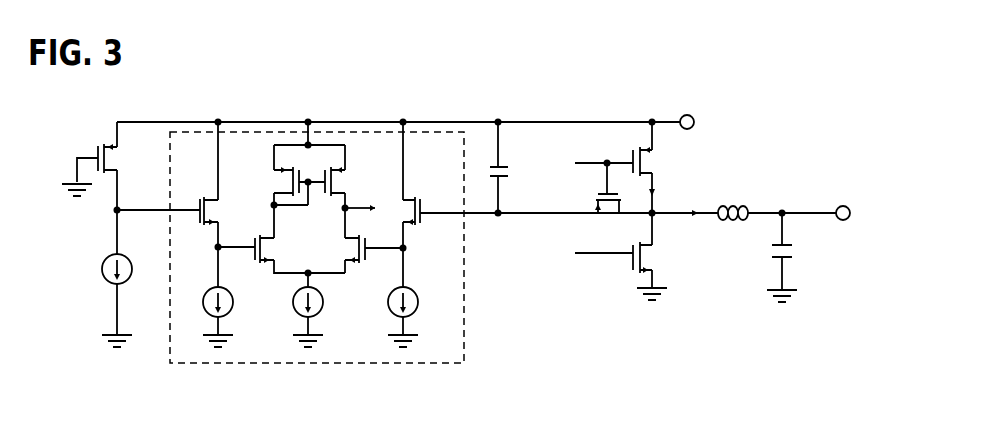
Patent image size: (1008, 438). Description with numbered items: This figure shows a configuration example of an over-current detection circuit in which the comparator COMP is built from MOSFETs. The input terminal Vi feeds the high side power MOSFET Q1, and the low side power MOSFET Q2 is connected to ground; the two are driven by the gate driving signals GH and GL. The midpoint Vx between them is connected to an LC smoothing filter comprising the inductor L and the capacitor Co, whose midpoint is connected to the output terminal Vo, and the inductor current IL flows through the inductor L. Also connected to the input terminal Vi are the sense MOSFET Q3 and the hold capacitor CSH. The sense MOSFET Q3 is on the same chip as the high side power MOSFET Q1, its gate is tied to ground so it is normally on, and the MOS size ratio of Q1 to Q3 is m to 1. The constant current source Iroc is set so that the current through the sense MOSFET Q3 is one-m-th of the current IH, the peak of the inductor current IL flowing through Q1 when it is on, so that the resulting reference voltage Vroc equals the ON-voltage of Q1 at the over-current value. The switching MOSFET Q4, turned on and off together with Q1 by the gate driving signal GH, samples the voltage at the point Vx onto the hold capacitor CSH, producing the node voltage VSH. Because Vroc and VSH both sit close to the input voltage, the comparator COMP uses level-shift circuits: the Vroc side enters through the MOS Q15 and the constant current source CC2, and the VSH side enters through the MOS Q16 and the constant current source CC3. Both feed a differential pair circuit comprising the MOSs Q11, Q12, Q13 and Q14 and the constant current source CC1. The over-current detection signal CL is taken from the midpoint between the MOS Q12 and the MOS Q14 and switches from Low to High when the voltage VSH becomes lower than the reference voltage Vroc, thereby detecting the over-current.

The sense MOSFET size ratio 1 is at (102, 132).
The sense MOSFET Q3 is at (135, 152).
The reference voltage for over-current detection Vroc is at (152, 197).
The constant current source Iroc is at (100, 272).
The comparator COMP is at (333, 395).
The level-shift MOS Q15 is at (208, 197).
The differential pair circuit MOS Q13 is at (277, 190).
The differential pair circuit MOS Q14 is at (343, 190).
The differential pair circuit MOS Q11 is at (262, 235).
The differential pair circuit MOS Q12 is at (345, 247).
The level-shift MOS Q16 is at (427, 180).
The over-current detection signal CL is at (363, 212).
The constant current source CC1 is at (323, 303).
The constant current source CC2 is at (233, 303).
The constant current source CC3 is at (418, 303).
The hold capacitor CSH is at (507, 153).
The node voltage of the hold capacitor VSH is at (473, 218).
The gate driving signal of the high side power MOSFET GH is at (577, 165).
The gate driving signal of the low side power MOSFET GL is at (587, 257).
The switching MOSFET Q4 is at (613, 210).
The high side power MOSFET Q1 is at (650, 168).
The low side power MOSFET Q2 is at (652, 252).
The MOS size ratio m is at (635, 138).
The current IH is at (641, 193).
The input terminal Vi is at (695, 113).
The point Vx is at (672, 212).
The inductor current IL is at (696, 226).
The inductor L is at (743, 205).
The output terminal Vo is at (862, 190).
The capacitor Co is at (770, 260).